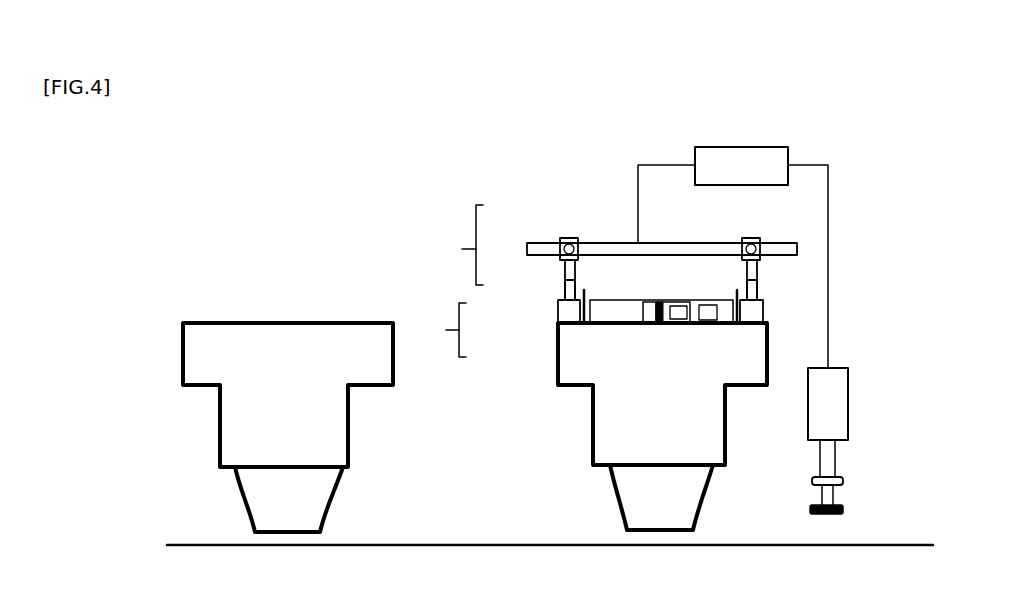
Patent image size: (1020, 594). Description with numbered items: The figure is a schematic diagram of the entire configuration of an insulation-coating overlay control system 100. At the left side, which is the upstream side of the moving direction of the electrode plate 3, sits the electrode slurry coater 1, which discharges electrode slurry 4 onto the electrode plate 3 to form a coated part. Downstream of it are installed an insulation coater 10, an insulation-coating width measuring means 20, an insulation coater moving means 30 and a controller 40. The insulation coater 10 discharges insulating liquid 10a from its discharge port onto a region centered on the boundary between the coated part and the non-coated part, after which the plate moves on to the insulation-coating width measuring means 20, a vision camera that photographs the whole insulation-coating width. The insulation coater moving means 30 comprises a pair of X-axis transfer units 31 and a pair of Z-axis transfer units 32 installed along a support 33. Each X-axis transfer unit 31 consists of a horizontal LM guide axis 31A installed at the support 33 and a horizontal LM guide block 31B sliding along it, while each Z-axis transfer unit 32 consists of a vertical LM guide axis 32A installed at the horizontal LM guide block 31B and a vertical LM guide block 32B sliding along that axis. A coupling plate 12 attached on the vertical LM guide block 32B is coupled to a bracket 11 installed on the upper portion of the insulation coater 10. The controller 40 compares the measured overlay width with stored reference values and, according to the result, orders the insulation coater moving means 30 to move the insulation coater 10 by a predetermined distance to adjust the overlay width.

The electrode slurry coater 1 is at (284, 338).
The electrode plate 3 is at (422, 545).
The electrode slurry 4 is at (265, 503).
The insulation coater 10 is at (603, 400).
The insulating liquid 10a is at (638, 502).
The bracket 11 is at (622, 305).
The coupling plate 12 is at (590, 297).
The insulation-coating width measuring means 20 is at (835, 397).
The insulation coater moving means 30 is at (435, 276).
The X-axis transfer unit 31 is at (601, 251).
The horizontal LM guide axis 31A is at (566, 261).
The horizontal LM guide block 31B is at (565, 242).
The Z-axis transfer unit 32 is at (593, 318).
The vertical LM guide axis 32A is at (566, 286).
The vertical LM guide block 32B is at (562, 312).
The support 33 is at (683, 248).
The controller 40 is at (728, 156).
The insulation-coating overlay control system 100 is at (818, 148).